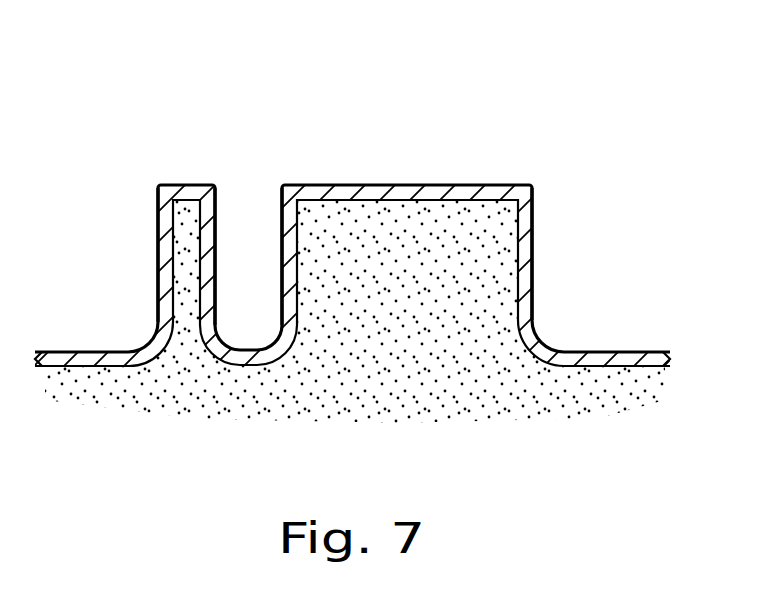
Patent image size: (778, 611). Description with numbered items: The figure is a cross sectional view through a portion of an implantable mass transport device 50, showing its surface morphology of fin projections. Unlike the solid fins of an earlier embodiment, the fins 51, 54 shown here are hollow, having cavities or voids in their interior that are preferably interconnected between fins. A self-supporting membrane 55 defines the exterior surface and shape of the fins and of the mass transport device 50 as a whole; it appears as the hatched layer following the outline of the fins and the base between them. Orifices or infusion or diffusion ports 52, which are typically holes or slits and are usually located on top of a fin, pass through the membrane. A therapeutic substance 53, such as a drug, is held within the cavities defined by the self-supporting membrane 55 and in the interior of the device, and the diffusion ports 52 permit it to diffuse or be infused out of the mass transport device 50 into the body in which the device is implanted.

The implantable mass transport device 50 is at (610, 302).
The fin 51 is at (282, 238).
The diffusion port 52 is at (186, 198).
The therapeutic substance 53 is at (548, 412).
The fin 54 is at (160, 255).
The self-supporting membrane 55 is at (520, 252).